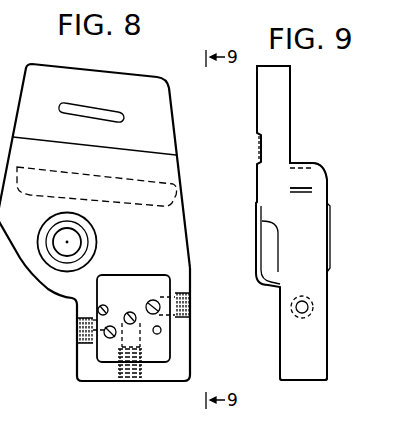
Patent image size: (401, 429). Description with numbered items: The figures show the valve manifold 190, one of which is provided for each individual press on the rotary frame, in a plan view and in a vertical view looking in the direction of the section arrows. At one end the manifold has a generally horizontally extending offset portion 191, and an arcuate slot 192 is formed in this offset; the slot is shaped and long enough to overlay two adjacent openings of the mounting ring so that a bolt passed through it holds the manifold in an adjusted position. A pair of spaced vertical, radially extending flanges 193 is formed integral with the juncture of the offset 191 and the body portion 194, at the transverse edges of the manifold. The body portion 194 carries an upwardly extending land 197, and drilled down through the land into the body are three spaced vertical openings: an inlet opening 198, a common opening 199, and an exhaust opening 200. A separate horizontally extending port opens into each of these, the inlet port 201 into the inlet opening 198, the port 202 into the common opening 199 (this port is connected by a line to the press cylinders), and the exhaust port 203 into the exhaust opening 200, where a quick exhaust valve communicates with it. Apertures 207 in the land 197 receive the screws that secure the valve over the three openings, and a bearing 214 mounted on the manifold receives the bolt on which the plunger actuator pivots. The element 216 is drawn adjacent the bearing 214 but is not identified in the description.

In FIG. 9, the valve manifold 190 is at (277, 137).
In FIG. 8, the offset portion 191 is at (158, 131).
In FIG. 9, the offset portion 191 is at (280, 105).
In FIG. 8, the arcuate slot 192 is at (100, 110).
In FIG. 8, the flanges 193 is at (184, 207).
In FIG. 9, the flanges 193 is at (305, 185).
In FIG. 8, the body portion 194 is at (182, 359).
In FIG. 9, the body portion 194 is at (315, 283).
In FIG. 8, the land 197 is at (134, 295).
In FIG. 9, the land 197 is at (278, 356).
In FIG. 8, the inlet opening 198 is at (113, 338).
In FIG. 8, the common opening 199 is at (132, 313).
In FIG. 8, the exhaust opening 200 is at (153, 300).
In FIG. 8, the inlet port 201 is at (78, 314).
In FIG. 8, the port 202 is at (118, 372).
In FIG. 8, the exhaust port 203 is at (183, 293).
In FIG. 9, the exhaust port 203 is at (308, 312).
In FIG. 8, the apertures 207 is at (102, 305).
In FIG. 8, the bearing 214 is at (82, 242).
In FIG. 8, the boss 216 is at (56, 226).